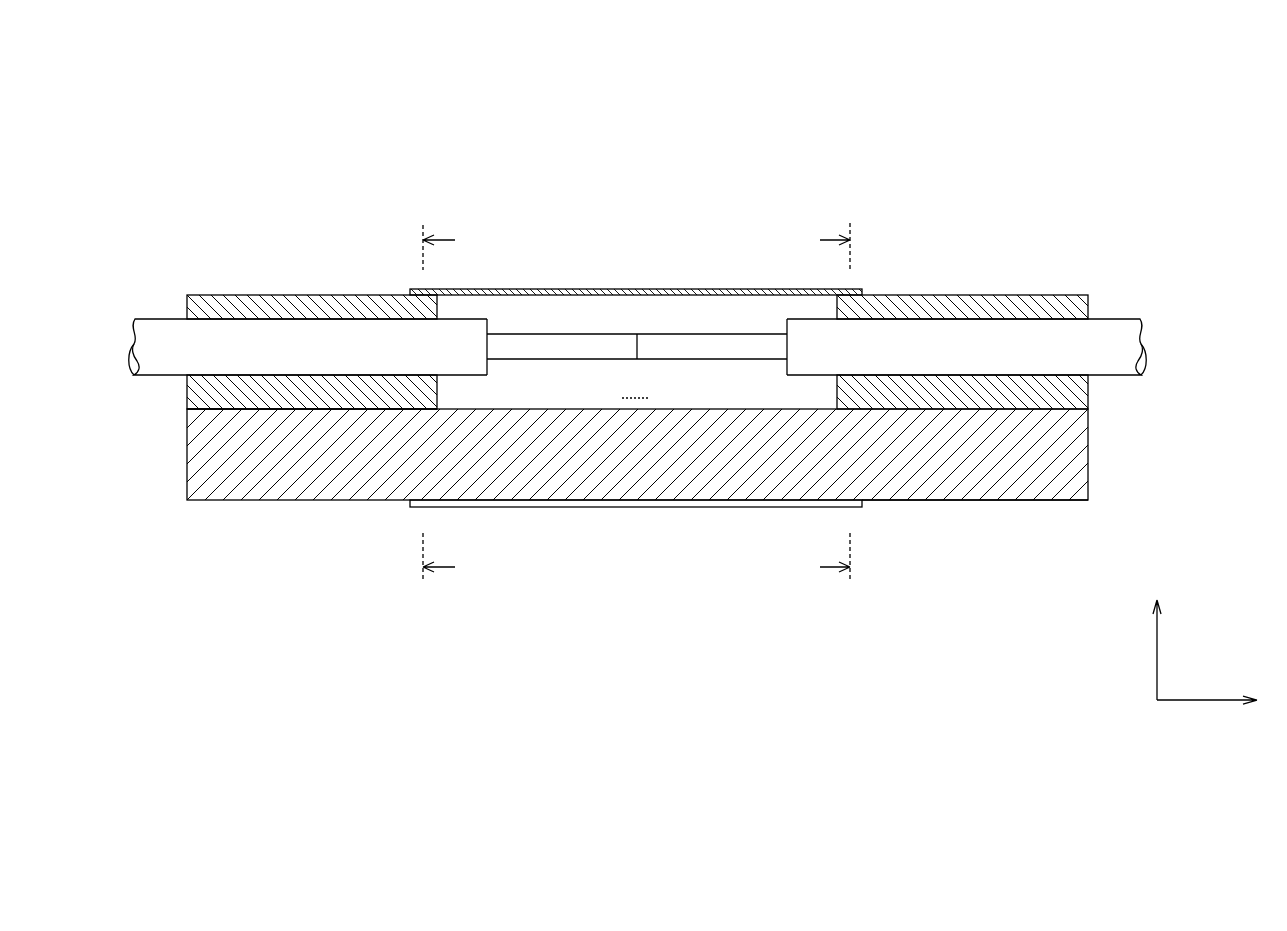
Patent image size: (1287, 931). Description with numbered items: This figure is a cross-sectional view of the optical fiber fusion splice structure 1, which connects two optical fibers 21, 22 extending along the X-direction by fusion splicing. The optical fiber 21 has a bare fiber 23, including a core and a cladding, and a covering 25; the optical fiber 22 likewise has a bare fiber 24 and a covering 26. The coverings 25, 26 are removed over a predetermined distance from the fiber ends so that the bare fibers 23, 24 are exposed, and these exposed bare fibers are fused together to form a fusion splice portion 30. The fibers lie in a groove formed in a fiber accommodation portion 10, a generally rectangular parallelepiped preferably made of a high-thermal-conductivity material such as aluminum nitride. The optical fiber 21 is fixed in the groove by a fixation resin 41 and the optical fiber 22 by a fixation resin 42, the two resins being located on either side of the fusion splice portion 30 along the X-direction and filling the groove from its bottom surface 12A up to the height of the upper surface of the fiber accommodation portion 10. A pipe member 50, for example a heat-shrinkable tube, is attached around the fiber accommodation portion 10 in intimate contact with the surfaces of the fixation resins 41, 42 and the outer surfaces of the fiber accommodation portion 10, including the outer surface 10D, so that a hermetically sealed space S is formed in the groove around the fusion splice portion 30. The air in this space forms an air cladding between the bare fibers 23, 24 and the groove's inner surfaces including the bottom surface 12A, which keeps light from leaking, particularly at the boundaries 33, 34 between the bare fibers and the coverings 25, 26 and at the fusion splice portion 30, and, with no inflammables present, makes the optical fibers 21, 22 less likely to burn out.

The optical fiber fusion splice structure 1 is at (1122, 143).
The fiber accommodation portion 10 is at (1088, 443).
The outer surface of the fiber accommodation portion 10D is at (978, 500).
The bottom surface of the fiber accommodation groove 12A is at (232, 409).
The optical fiber 21 is at (293, 285).
The optical fiber 22 is at (980, 286).
The bare fiber 23 is at (572, 334).
The bare fiber 24 is at (710, 334).
The covering 25 is at (308, 294).
The covering 26 is at (958, 293).
The fusion splice portion 30 is at (637, 275).
The boundary 33 is at (492, 327).
The boundary 34 is at (778, 323).
The fixation resin 41 is at (358, 298).
The fixation resin 42 is at (992, 298).
The pipe member 50 is at (660, 507).